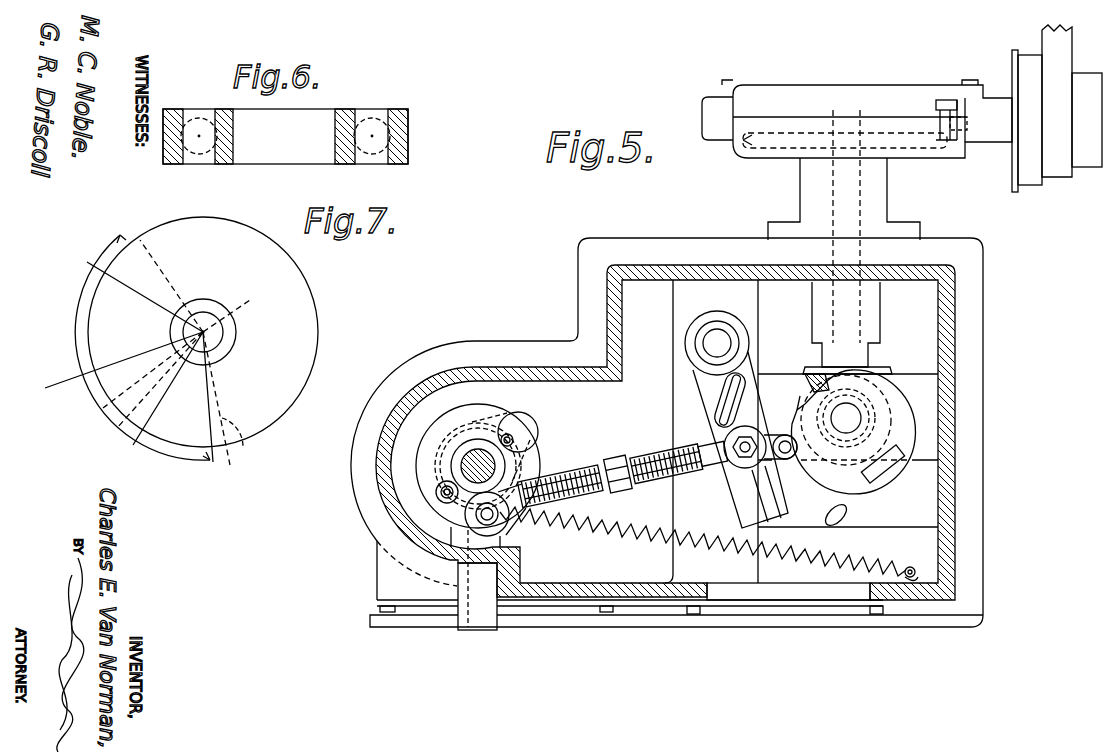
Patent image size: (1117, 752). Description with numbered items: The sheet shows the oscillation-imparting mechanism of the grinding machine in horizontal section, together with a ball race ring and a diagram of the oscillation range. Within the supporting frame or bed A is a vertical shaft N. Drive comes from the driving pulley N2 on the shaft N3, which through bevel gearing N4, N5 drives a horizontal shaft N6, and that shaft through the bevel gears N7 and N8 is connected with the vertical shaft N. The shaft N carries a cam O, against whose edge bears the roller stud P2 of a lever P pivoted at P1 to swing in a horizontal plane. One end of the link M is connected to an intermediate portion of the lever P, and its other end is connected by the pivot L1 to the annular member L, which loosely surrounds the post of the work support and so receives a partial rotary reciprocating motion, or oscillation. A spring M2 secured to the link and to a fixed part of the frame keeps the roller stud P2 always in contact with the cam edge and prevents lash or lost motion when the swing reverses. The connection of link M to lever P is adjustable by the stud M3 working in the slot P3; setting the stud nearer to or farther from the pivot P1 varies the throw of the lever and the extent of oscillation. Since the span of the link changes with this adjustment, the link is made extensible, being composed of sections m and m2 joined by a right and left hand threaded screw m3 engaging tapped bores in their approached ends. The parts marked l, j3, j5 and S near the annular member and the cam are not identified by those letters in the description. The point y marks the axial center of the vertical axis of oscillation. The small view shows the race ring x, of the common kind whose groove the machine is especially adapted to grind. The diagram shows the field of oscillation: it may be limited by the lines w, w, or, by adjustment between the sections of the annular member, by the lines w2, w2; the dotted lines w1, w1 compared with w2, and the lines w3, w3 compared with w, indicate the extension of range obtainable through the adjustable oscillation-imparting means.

In FIG. 6, the race ring x is at (405, 110).
In FIG. 7, the oscillation limit lines w is at (170, 411).
In FIG. 7, the dotted extension lines w1 is at (153, 323).
In FIG. 7, the oscillation limit lines w2 is at (122, 319).
In FIG. 7, the extension lines w3 is at (177, 399).
In FIG. 7, the axis of oscillation y is at (230, 315).
In FIG. 5, the supporting frame A is at (988, 484).
In FIG. 5, the vertical shaft N is at (847, 417).
In FIG. 5, the driving pulley N2 is at (1030, 183).
In FIG. 5, the pulley shaft N3 is at (956, 100).
In FIG. 5, the bevel gear N4 is at (935, 108).
In FIG. 5, the bevel gear N5 is at (837, 130).
In FIG. 5, the horizontal shaft N6 is at (860, 203).
In FIG. 5, the bevel gear N7 is at (812, 373).
In FIG. 5, the bevel gear N8 is at (810, 392).
In FIG. 5, the lever P is at (706, 378).
In FIG. 5, the lever pivot P1 is at (703, 344).
In FIG. 5, the roller stud P2 is at (790, 463).
In FIG. 5, the slot P3 is at (729, 402).
In FIG. 5, the oscillation imparting link M is at (562, 477).
In FIG. 5, the spring M2 is at (604, 541).
In FIG. 5, the stud M3 is at (737, 457).
In FIG. 5, the link section m is at (558, 465).
In FIG. 5, the link section m2 is at (661, 452).
In FIG. 5, the right and left hand threaded screw m3 is at (624, 466).
In FIG. 5, the annular member L is at (494, 411).
In FIG. 5, the pivot L1 is at (506, 527).
In FIG. 5, the shaft l is at (475, 468).
In FIG. 5, the clamp screw j5 is at (513, 440).
In FIG. 5, the clamp screw j3 is at (441, 493).
In FIG. 5, the slot S is at (880, 476).
In FIG. 5, the cam O is at (836, 515).